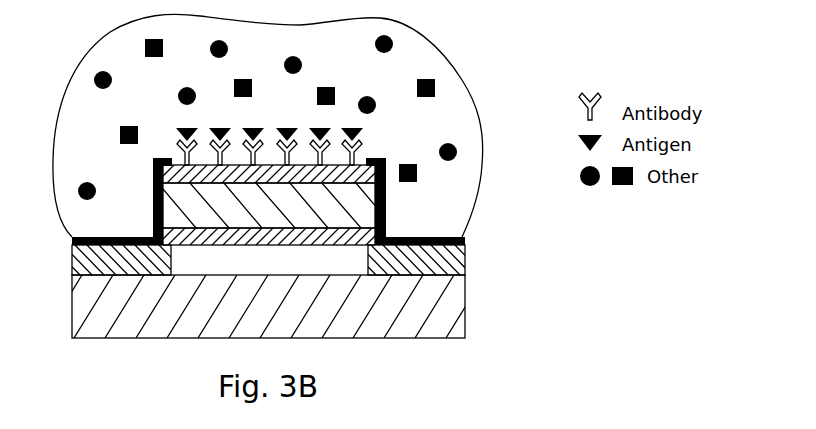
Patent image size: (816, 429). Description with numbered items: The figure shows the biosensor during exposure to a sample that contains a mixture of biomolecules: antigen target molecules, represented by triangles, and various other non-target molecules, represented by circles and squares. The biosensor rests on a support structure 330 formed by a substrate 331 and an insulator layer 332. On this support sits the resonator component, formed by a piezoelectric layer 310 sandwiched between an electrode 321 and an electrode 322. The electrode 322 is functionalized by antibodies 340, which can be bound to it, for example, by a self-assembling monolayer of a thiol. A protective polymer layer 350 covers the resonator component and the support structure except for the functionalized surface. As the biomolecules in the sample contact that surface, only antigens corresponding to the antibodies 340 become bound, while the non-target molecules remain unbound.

The piezoelectric layer 310 is at (387, 210).
The electrode 321 is at (153, 173).
The electrode 322 is at (153, 236).
The support substrate 330 is at (271, 289).
The substrate 331 is at (466, 263).
The insulator layer 332 is at (466, 298).
The antibodies 340 is at (374, 143).
The protective polymer layer 350 is at (448, 238).